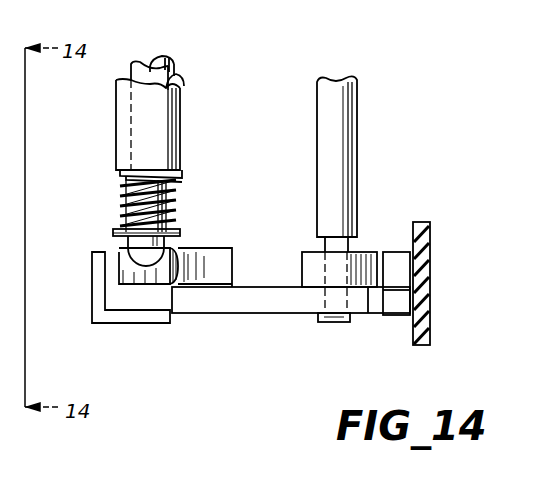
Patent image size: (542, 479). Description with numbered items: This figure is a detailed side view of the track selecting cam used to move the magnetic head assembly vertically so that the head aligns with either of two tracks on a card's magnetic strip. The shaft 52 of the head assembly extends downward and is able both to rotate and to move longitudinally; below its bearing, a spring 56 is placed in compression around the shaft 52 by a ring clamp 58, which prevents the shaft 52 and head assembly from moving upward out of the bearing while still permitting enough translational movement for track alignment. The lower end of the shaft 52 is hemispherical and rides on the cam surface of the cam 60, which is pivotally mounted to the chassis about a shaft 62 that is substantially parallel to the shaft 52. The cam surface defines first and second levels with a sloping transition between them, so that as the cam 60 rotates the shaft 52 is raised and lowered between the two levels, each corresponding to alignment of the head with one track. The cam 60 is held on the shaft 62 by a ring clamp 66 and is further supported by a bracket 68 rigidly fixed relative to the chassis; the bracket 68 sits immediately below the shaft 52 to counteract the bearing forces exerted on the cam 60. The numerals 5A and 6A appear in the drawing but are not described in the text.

The shaft 52 is at (172, 64).
The cylinder 5A is at (184, 104).
The spring 56 is at (173, 188).
The ring clamp 58 is at (181, 232).
The socket 6A is at (120, 268).
The bracket 68 is at (142, 326).
The cam 60 is at (242, 314).
The ring clamp 66 is at (318, 316).
The shaft 62 is at (360, 128).